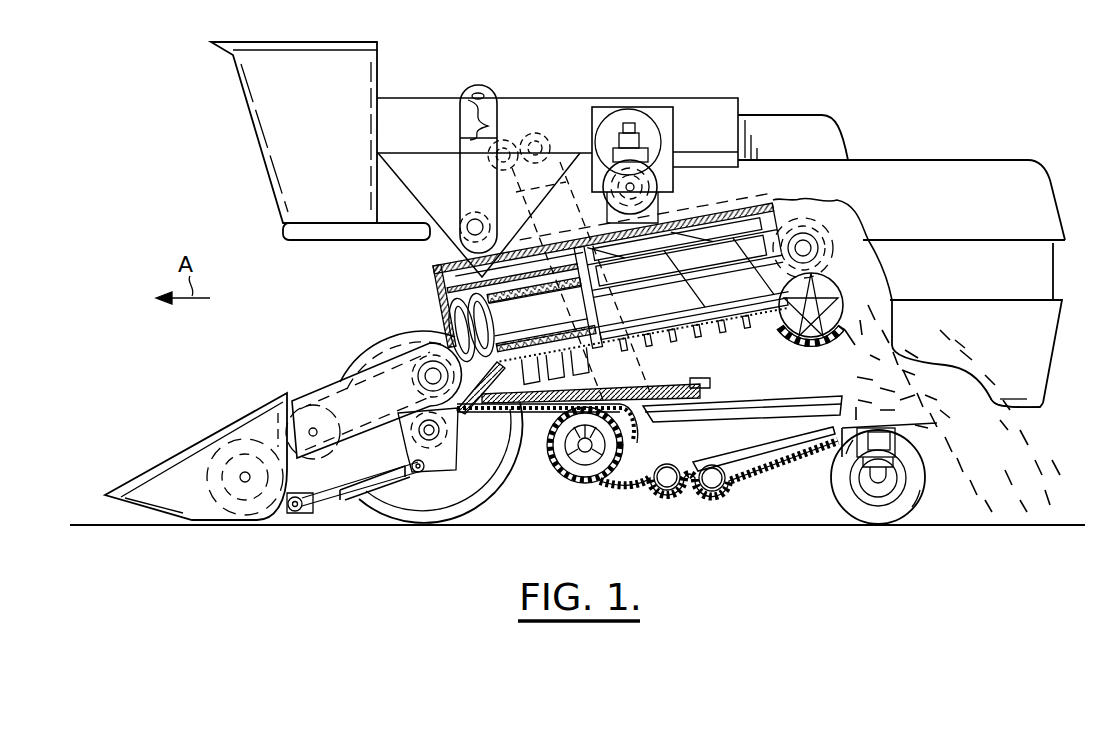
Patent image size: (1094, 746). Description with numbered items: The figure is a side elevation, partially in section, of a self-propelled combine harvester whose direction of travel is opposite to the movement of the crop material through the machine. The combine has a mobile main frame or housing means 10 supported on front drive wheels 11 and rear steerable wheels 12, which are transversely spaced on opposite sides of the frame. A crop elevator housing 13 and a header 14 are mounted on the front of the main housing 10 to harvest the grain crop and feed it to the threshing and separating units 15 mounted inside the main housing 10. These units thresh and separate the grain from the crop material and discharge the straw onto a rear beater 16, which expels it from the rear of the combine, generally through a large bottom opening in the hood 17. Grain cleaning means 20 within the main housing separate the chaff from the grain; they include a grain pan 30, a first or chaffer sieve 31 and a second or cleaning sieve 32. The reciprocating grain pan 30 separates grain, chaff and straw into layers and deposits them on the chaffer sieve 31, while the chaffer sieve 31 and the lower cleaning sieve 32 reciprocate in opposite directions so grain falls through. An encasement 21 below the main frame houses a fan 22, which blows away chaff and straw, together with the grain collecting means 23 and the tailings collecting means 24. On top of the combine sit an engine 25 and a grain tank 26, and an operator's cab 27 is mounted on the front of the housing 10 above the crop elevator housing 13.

The main frame or housing means 10 is at (797, 115).
The front drive wheels 11 is at (388, 332).
The rear steerable wheels 12 is at (918, 481).
The crop elevator housing 13 is at (330, 387).
The header 14 is at (186, 452).
The threshing and separating units 15 is at (428, 296).
The rear beater 16 is at (862, 295).
The hood 17 is at (1015, 410).
The grain cleaning means 20 is at (697, 382).
The encasement 21 is at (567, 480).
The fan 22 is at (598, 482).
The grain collecting means 23 is at (662, 497).
The tailings collecting means 24 is at (738, 475).
The engine 25 is at (656, 115).
The grain tank 26 is at (428, 96).
The operator's cab 27 is at (252, 128).
The grain pan 30 is at (640, 388).
The first or chaffer sieve 31 is at (788, 394).
The second or cleaning sieve 32 is at (758, 422).